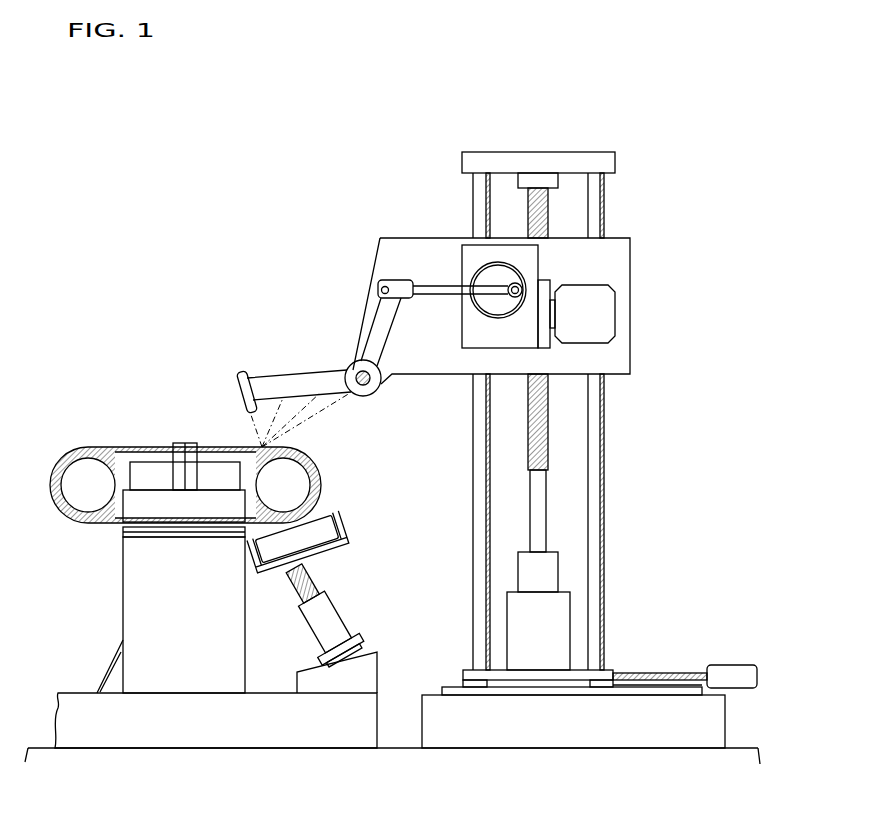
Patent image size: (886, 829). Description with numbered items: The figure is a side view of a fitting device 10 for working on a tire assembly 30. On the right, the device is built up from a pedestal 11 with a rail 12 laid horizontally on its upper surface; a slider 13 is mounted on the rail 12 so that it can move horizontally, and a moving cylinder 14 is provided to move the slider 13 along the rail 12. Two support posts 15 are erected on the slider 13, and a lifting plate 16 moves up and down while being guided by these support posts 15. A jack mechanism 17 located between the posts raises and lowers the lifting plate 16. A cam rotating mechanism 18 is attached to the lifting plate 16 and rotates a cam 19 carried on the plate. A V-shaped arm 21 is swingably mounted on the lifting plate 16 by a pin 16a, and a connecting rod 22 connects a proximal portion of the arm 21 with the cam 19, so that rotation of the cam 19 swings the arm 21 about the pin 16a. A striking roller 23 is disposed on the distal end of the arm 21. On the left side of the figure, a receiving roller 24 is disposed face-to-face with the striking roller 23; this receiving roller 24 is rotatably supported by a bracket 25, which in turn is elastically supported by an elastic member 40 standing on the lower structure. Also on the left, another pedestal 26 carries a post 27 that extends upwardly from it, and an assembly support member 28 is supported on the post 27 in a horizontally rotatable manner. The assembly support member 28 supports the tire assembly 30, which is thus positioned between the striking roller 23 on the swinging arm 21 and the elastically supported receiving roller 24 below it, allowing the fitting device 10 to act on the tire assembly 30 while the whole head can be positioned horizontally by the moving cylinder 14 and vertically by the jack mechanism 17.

The fitting device 10 is at (277, 152).
The pedestal 11 is at (600, 725).
The rail 12 is at (535, 695).
The slider 13 is at (463, 670).
The moving cylinder 14 is at (730, 672).
The support posts 15 is at (473, 528).
The lifting plate 16 is at (590, 260).
The pin 16a is at (357, 370).
The jack mechanism 17 is at (552, 623).
The cam rotating mechanism 18 is at (590, 315).
The cam 19 is at (488, 273).
The V-shaped arm 21 is at (295, 387).
The connecting rod 22 is at (433, 278).
The striking roller 23 is at (242, 397).
The receiving roller 24 is at (320, 517).
The bracket 25 is at (335, 555).
The pedestal 26 is at (180, 727).
The post 27 is at (150, 618).
The assembly support member 28 is at (150, 512).
The tire assembly 30 is at (157, 433).
The elastic member 40 is at (280, 660).